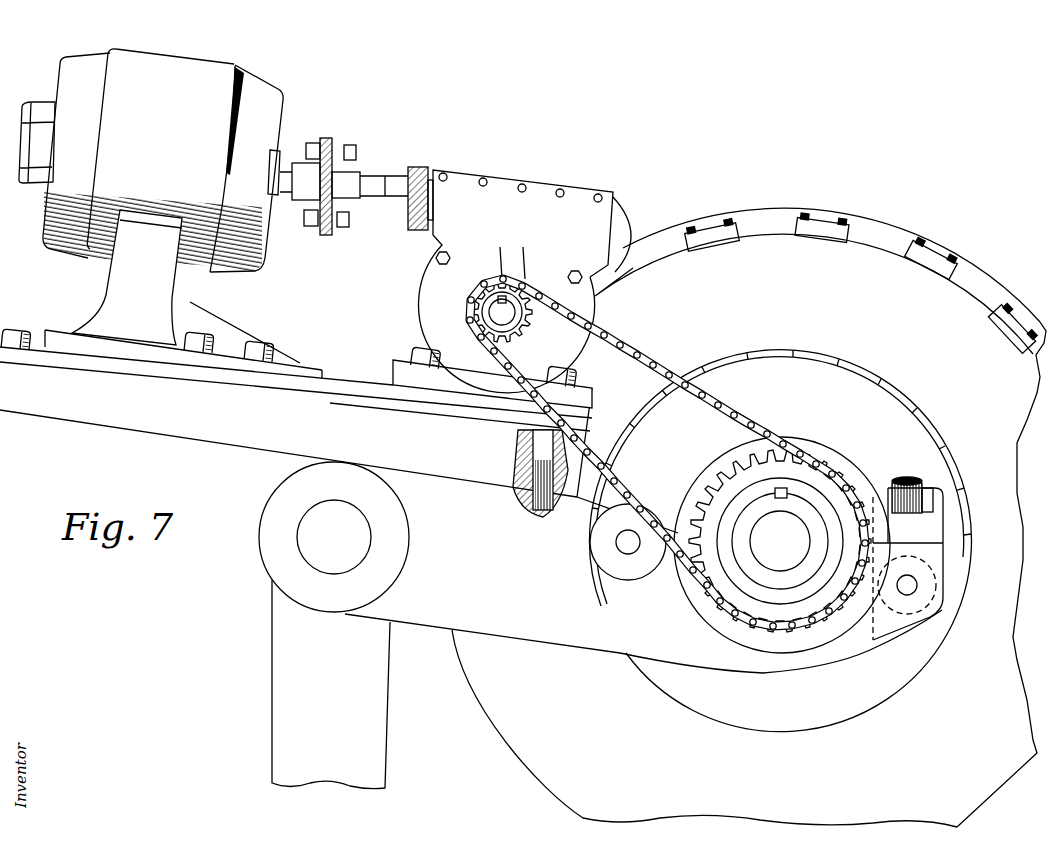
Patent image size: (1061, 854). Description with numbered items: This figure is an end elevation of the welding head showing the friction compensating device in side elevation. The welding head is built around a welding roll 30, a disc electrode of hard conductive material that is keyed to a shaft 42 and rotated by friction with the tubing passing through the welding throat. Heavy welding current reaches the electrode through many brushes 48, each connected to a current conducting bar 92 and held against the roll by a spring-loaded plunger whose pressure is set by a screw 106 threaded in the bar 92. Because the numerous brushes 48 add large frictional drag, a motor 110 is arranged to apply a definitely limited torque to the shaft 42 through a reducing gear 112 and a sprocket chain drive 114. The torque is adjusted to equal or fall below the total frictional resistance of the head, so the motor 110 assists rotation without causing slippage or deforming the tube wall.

The welding roll 30 is at (562, 780).
The shaft 42 is at (790, 531).
The brushes 48 is at (858, 372).
The current conducting bar 92 is at (940, 270).
The screw 106 is at (927, 247).
The motor 110 is at (257, 88).
The reducing gear 112 is at (625, 212).
The sprocket chain drive 114 is at (660, 372).